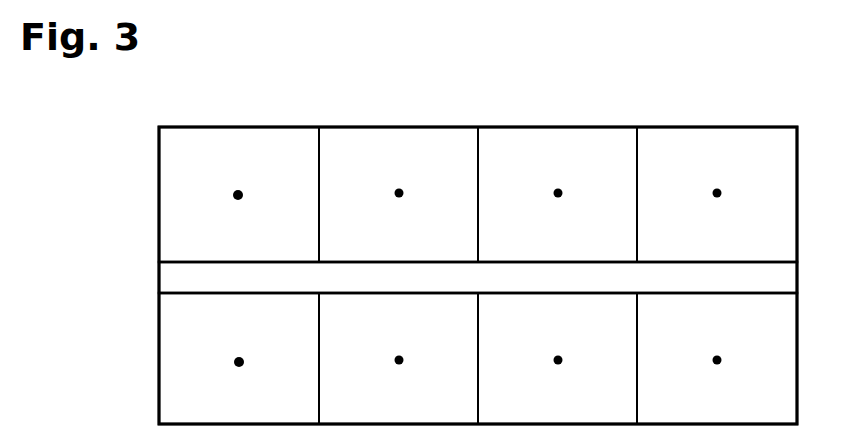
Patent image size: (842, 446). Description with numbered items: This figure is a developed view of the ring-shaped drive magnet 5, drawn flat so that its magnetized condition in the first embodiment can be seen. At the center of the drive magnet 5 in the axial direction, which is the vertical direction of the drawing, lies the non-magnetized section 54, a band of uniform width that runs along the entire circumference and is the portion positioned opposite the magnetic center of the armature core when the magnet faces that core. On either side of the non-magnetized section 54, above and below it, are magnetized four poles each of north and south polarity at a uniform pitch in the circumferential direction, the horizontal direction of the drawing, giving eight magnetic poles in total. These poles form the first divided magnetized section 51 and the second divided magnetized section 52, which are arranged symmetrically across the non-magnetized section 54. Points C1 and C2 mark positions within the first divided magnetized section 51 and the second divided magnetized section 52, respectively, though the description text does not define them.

The drive magnet 5 is at (65, 178).
The first divided magnetized section 51 is at (175, 222).
The second divided magnetized section 52 is at (175, 362).
The non-magnetized section 54 is at (501, 286).
The pole center of upper magnet C1 is at (241, 198).
The pole center of lower magnet C2 is at (242, 365).